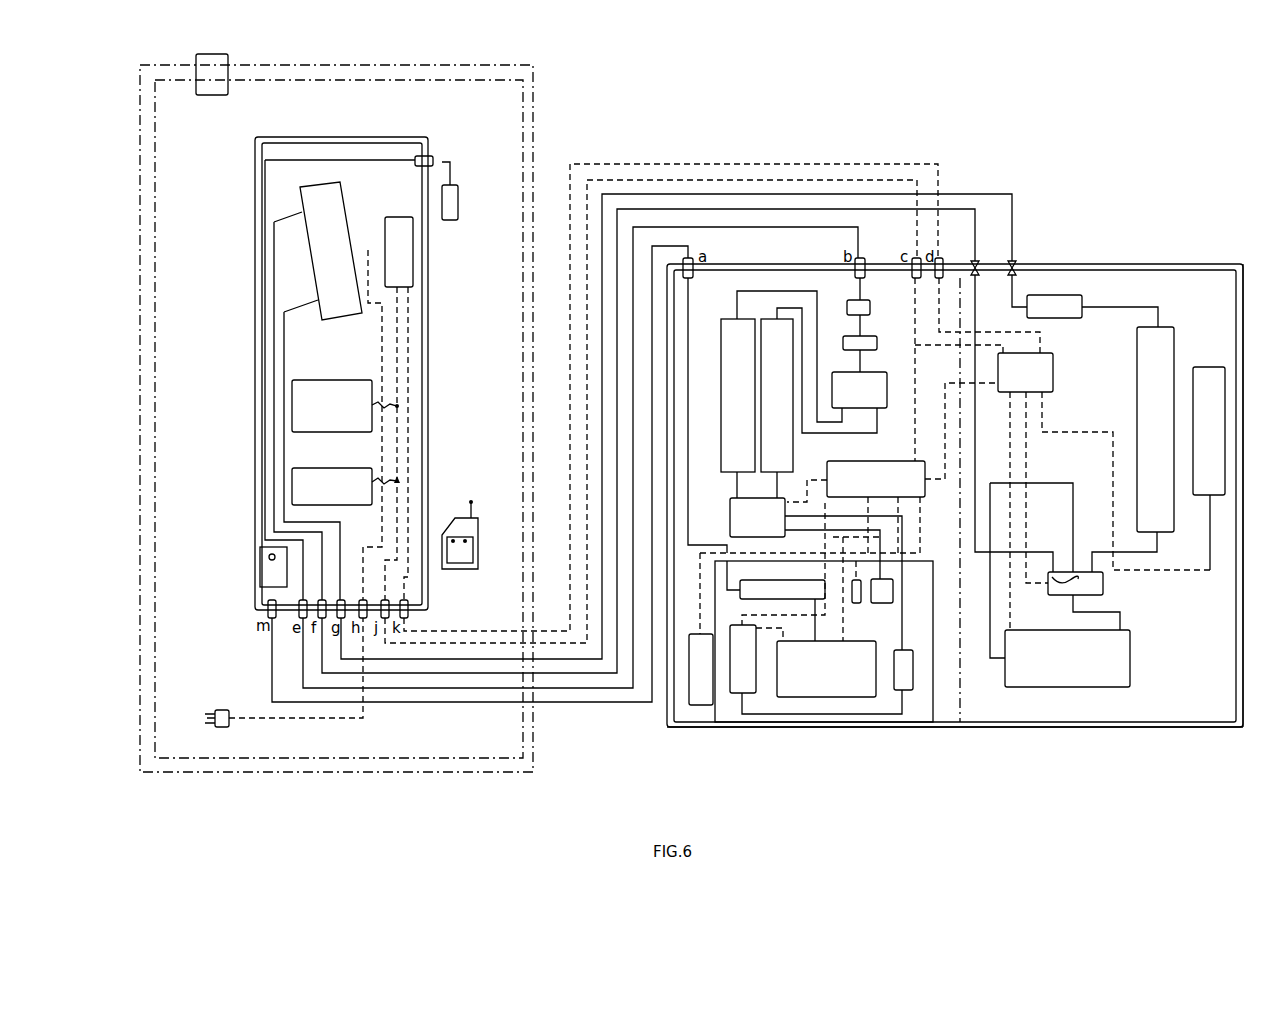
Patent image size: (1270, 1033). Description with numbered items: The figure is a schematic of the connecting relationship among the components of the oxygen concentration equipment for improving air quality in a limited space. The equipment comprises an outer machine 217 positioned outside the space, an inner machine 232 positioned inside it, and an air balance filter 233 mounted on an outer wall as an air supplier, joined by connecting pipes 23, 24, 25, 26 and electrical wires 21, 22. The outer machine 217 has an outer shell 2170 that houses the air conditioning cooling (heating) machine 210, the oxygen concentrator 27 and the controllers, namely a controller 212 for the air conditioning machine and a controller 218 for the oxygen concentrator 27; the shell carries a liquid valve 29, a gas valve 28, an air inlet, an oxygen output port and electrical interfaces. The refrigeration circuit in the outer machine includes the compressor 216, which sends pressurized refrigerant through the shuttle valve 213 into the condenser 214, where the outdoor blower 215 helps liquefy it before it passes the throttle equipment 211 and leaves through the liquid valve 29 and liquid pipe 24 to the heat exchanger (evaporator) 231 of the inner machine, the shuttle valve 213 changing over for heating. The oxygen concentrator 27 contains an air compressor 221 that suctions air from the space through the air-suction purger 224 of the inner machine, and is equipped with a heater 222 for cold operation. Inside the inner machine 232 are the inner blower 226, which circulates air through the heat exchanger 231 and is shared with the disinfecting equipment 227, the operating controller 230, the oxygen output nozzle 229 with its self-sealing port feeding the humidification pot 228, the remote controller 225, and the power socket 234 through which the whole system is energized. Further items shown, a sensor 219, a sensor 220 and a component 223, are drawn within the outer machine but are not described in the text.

The electrical wire 21 is at (652, 153).
The electrical wire 22 is at (655, 180).
The connecting pipe 23 is at (660, 245).
The liquid pipe 24 is at (730, 194).
The connecting pipe 25 is at (762, 209).
The connecting pipe 26 is at (793, 227).
The oxygen concentrator 27 is at (885, 283).
The gas valve 28 is at (975, 262).
The liquid valve 29 is at (1012, 262).
The air conditioning cooling (heating) machine 210 is at (1040, 275).
The throttle equipment 211 is at (1052, 298).
The controller of the air conditioning cooling (heating) machine 212 is at (1050, 365).
The shuttle valve 213 is at (1097, 578).
The condenser 214 is at (1140, 330).
The outdoor blower 215 is at (1203, 373).
The compressor 216 is at (1127, 677).
The outer machine 217 is at (1116, 728).
The outer shell 2170 is at (1242, 727).
The controller of the oxygen concentrator 218 is at (920, 488).
The sensor 219 is at (905, 680).
The sensor 220 is at (857, 603).
The air compressor 221 is at (795, 690).
The heater 222 is at (750, 690).
The cooler 223 is at (695, 697).
The air-suction purger 224 is at (285, 570).
The remote controller 225 is at (453, 518).
The inner blower 226 is at (363, 475).
The disinfecting equipment 227 is at (368, 427).
The humidification pot 228 is at (453, 190).
The oxygen output nozzle 229 is at (428, 158).
The operating controller 230 is at (395, 220).
The heat exchanger (evaporator) 231 is at (330, 190).
The inner machine 232 is at (279, 138).
The air balance filter 233 is at (222, 80).
The power socket 234 is at (218, 714).